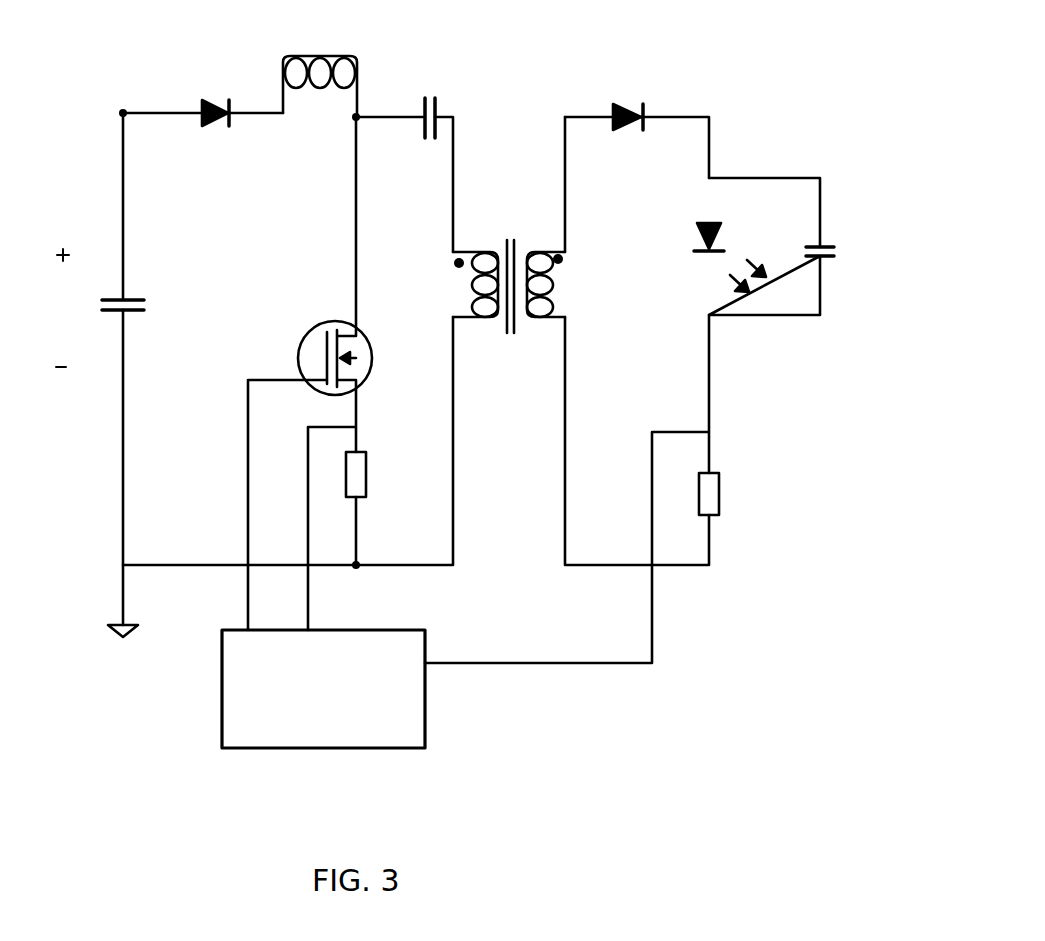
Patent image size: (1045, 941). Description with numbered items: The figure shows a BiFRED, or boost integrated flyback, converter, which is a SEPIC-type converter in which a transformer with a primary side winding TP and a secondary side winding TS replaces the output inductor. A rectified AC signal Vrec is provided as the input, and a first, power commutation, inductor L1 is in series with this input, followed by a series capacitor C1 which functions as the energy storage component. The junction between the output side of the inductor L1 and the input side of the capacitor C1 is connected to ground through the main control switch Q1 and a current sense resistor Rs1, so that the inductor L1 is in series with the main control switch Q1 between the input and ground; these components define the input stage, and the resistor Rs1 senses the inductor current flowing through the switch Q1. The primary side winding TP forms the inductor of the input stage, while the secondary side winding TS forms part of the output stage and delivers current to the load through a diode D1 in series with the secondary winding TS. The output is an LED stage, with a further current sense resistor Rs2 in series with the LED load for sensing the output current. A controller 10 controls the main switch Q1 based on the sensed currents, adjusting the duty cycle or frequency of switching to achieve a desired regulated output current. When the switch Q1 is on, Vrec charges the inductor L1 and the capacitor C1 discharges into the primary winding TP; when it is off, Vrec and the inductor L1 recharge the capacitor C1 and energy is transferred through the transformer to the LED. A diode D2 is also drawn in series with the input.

The controller 10 is at (422, 720).
The rectified AC signal Vrec is at (81, 375).
The diode D2 is at (203, 94).
The first inductor L1 is at (320, 68).
The series capacitor C1 is at (404, 155).
The main control switch Q1 is at (310, 373).
The current sense resistor Rs1 is at (383, 508).
The primary side winding TP is at (455, 284).
The secondary side winding TS is at (564, 284).
The diode D1 is at (637, 119).
The LED load LED is at (724, 246).
The further current sense resistor Rs2 is at (602, 489).